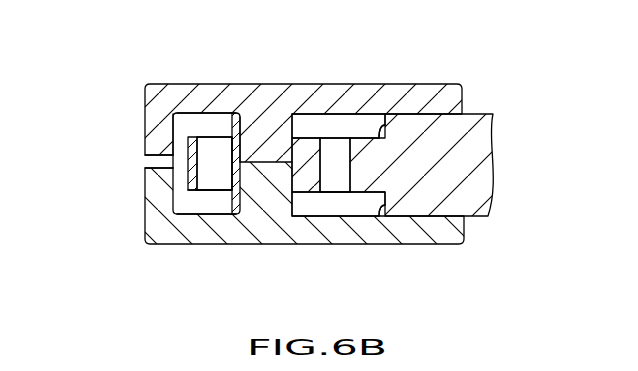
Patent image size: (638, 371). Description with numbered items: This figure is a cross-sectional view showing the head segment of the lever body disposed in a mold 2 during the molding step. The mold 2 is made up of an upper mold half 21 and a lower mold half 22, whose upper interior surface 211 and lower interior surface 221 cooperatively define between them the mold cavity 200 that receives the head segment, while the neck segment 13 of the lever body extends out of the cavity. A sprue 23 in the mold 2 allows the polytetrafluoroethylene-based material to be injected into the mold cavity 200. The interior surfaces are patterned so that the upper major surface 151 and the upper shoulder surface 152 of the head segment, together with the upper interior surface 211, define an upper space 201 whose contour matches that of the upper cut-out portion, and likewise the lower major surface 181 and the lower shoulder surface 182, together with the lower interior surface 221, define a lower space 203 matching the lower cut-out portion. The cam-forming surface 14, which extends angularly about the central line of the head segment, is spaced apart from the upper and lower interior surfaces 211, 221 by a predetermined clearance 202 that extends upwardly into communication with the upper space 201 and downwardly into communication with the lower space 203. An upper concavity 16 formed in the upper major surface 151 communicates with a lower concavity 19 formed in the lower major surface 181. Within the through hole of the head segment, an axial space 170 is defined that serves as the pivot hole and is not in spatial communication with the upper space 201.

The mold 2 is at (448, 76).
The neck segment 13 is at (472, 145).
The cam-forming surface 14 is at (207, 183).
The upper concavity 16 is at (213, 147).
The lower concavity 19 is at (192, 205).
The upper mold half 21 is at (287, 100).
The lower mold half 22 is at (205, 232).
The sprue 23 is at (155, 163).
The upper major surface 151 is at (238, 116).
The upper shoulder surface 152 is at (375, 118).
The axial space 170 is at (233, 182).
The lower major surface 181 is at (310, 193).
The lower shoulder surface 182 is at (382, 212).
The mold cavity 200 is at (183, 121).
The upper space 201 is at (347, 123).
The predetermined clearance 202 is at (173, 145).
The lower space 203 is at (358, 208).
The upper interior surface 211 is at (218, 116).
The lower interior surface 221 is at (221, 213).